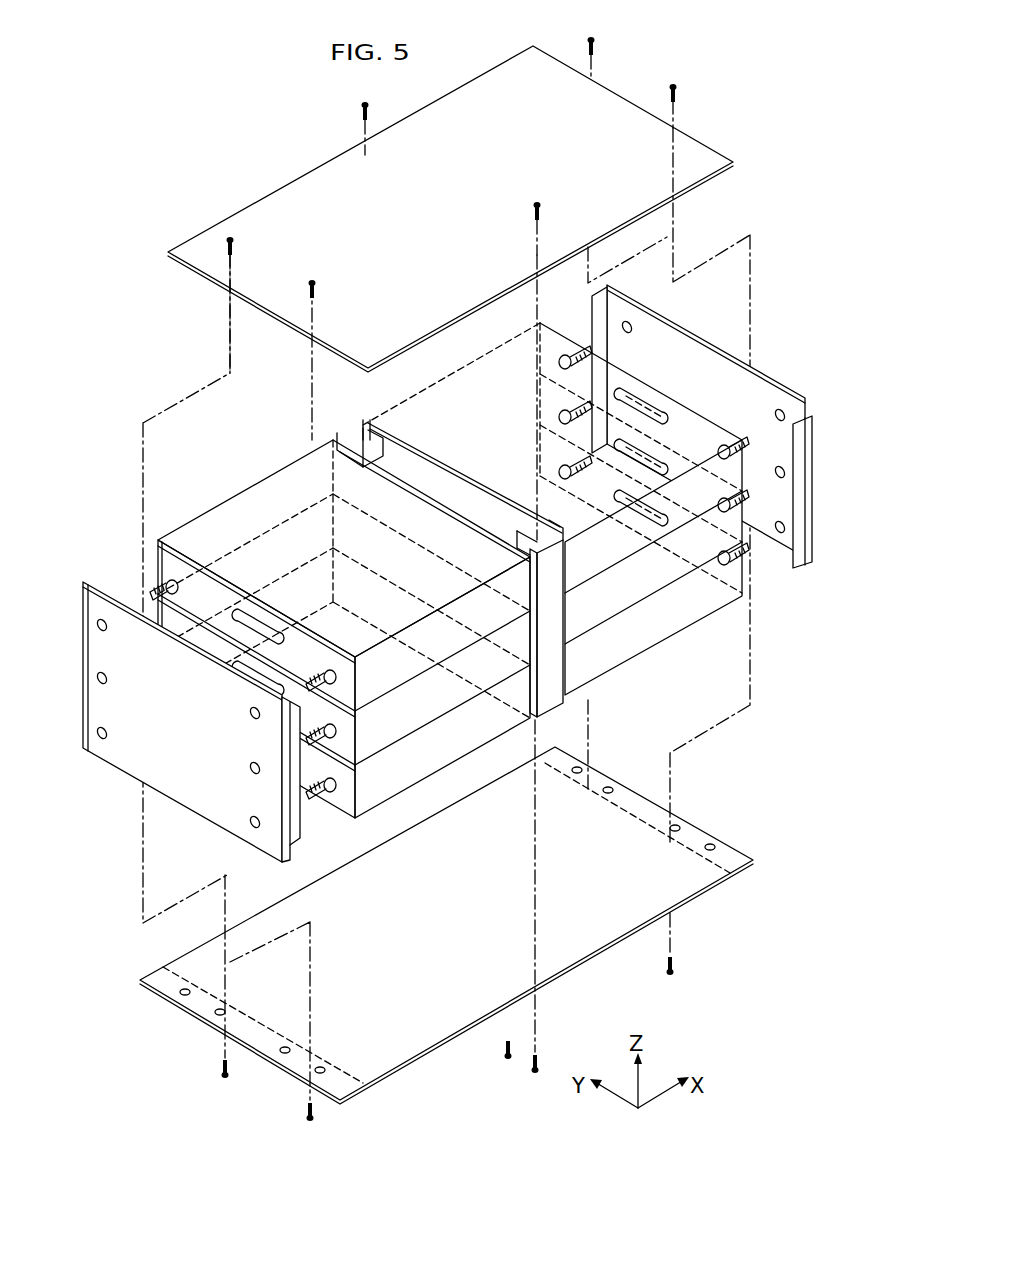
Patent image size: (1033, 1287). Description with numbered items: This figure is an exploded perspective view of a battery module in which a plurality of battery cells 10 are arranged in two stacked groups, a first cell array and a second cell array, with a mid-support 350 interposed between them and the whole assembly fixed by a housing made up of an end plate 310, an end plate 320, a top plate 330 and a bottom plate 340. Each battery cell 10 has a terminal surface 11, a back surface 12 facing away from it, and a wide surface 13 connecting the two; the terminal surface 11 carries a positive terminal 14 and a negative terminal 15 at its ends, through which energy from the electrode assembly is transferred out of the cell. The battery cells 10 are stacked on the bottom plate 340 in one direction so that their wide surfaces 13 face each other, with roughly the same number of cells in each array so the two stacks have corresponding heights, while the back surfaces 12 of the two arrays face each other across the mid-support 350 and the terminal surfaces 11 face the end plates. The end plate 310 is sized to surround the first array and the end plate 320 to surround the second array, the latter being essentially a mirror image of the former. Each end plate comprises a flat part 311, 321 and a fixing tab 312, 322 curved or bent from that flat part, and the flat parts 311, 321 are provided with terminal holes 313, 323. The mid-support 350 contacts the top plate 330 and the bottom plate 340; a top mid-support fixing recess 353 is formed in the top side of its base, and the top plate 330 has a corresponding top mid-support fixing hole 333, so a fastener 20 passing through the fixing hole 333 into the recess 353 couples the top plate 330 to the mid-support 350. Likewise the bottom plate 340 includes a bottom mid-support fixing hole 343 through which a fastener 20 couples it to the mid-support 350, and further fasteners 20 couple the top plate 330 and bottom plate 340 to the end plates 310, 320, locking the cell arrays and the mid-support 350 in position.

The battery cell 10 is at (453, 593).
The terminal surface 11 is at (692, 427).
The back surface 12 is at (350, 487).
The wide surface 13 is at (383, 613).
The positive terminal 14 is at (157, 583).
The negative terminal 15 is at (322, 680).
The fastener 20 is at (537, 200).
The end plate 310 is at (208, 738).
The flat part 311 is at (135, 760).
The fixing tab 312 is at (296, 834).
The terminal hole 313 is at (100, 738).
The end plate 320 is at (683, 443).
The flat part 321 is at (683, 340).
The fixing tab 322 is at (595, 305).
The terminal hole 323 is at (627, 321).
The top plate 330 is at (450, 209).
The top mid-support fixing hole 333 is at (537, 255).
The bottom plate 340 is at (451, 925).
The bottom mid-support fixing hole 343 is at (363, 868).
The mid-support 350 is at (457, 545).
The top mid-support fixing recess 353 is at (365, 437).